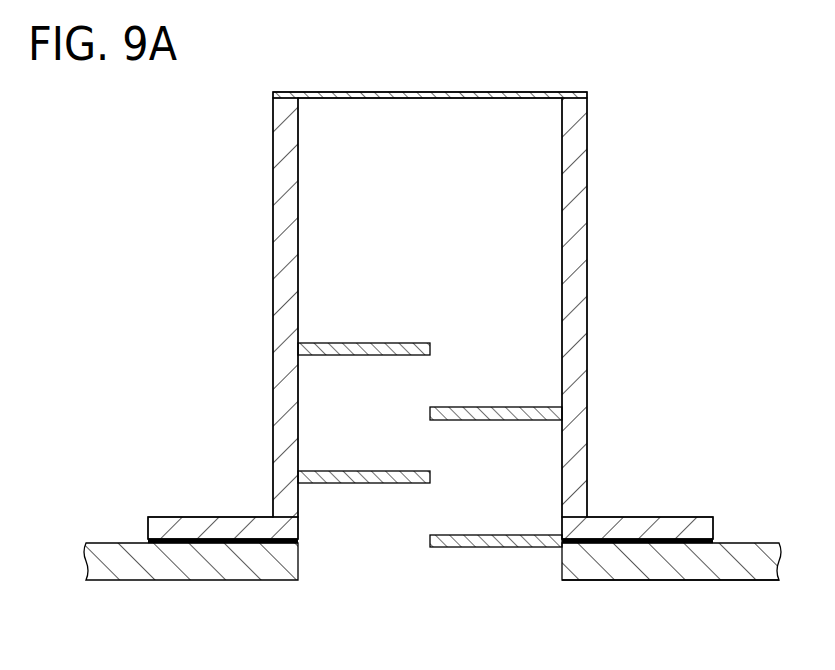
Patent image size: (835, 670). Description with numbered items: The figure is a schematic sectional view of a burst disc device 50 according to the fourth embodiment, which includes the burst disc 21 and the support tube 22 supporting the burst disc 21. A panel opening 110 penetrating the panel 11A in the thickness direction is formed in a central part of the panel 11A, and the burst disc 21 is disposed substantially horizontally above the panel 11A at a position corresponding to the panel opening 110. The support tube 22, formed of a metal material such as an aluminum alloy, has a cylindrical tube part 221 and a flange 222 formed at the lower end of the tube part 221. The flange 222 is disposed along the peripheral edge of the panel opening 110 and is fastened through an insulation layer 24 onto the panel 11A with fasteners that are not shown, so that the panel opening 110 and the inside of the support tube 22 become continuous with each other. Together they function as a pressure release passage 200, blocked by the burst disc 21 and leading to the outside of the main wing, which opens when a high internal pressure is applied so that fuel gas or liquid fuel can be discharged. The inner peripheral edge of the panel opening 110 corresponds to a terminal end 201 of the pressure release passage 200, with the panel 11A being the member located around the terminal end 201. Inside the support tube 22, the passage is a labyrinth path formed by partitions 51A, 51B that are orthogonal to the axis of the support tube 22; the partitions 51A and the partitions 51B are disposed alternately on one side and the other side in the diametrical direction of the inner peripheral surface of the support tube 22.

The burst disc device 50 is at (624, 128).
The burst disc 21 is at (475, 92).
The tube part 221 is at (273, 378).
The support tube 22 is at (587, 378).
The flange 222 is at (205, 517).
The insulation layer 24 is at (668, 530).
The partitions 51A is at (363, 343).
The partitions 51B is at (503, 407).
The pressure release passage 200 is at (448, 394).
The terminal end 201 is at (303, 566).
The panel opening 110 is at (557, 566).
The panel 11A is at (747, 580).